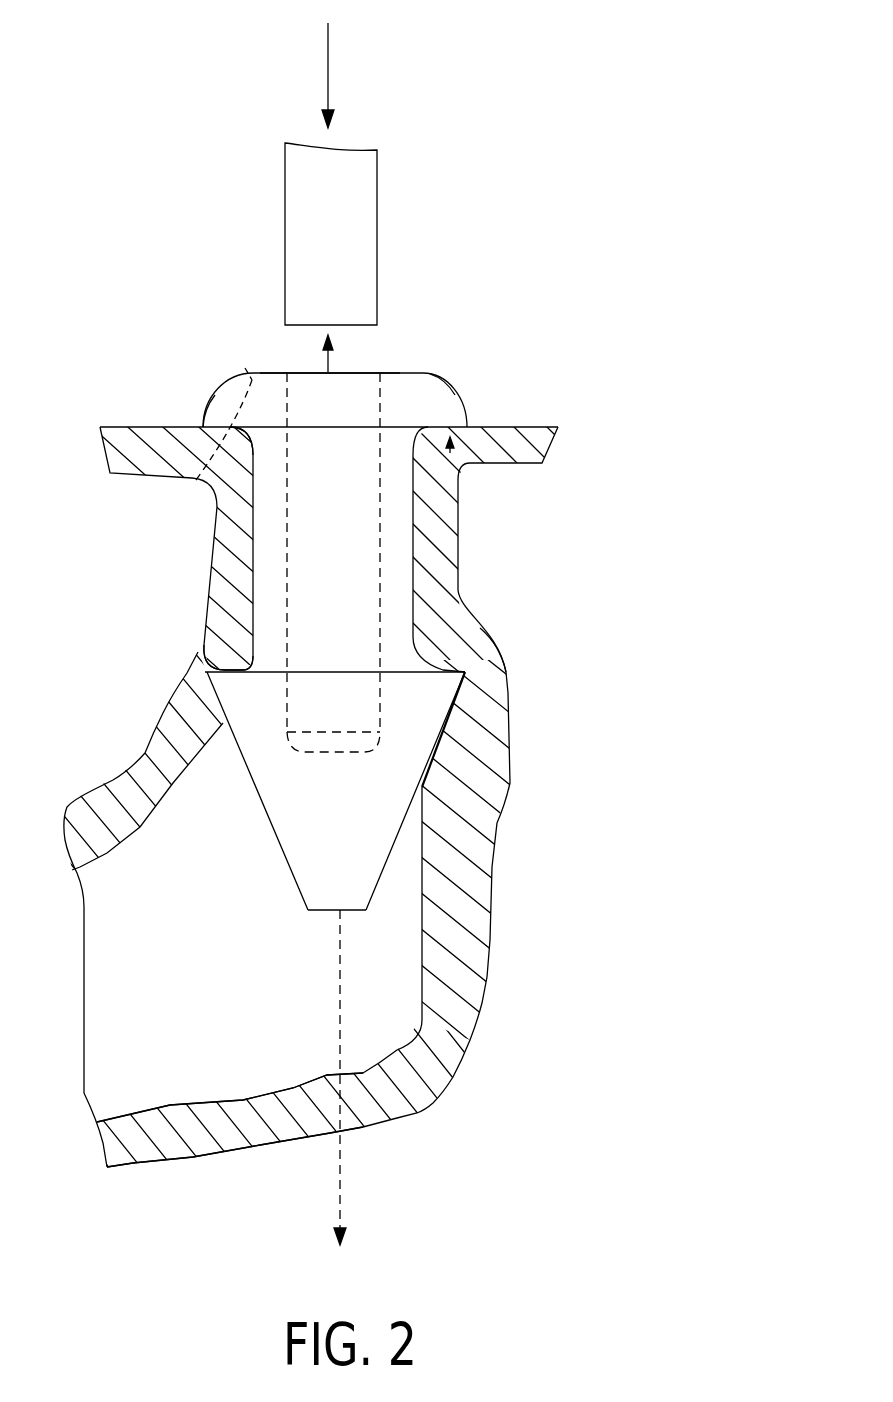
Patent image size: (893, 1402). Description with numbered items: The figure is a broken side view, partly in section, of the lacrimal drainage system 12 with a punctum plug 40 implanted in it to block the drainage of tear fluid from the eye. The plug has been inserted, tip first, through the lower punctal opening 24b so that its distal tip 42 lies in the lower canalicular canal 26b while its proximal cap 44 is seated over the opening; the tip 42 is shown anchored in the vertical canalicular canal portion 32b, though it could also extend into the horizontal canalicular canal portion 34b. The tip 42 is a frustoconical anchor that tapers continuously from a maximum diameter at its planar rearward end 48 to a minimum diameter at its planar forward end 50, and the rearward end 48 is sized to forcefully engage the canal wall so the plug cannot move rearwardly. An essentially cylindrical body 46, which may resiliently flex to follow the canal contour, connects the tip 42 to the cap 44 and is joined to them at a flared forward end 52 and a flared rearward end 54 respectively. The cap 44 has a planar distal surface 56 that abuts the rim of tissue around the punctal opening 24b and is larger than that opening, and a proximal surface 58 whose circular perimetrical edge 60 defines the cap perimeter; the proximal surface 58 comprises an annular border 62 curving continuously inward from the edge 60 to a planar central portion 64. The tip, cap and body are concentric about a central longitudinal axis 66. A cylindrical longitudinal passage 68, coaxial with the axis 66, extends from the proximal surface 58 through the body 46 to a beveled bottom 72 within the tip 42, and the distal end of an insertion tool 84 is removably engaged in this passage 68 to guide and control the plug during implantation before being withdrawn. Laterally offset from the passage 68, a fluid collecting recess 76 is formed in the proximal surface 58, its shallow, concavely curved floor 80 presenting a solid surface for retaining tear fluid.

The lacrimal drainage system 12 is at (314, 935).
The lower punctal opening 24b is at (428, 425).
The lower canalicular canal 26b is at (84, 775).
The vertical canalicular canal portion 32b is at (495, 643).
The horizontal canalicular canal portion 34b is at (128, 1170).
The punctum plug 40 is at (330, 477).
The distal tip 42 is at (373, 833).
The proximal cap 44 is at (197, 387).
The body 46 is at (428, 557).
The rearward end 48 is at (472, 638).
The forward end 50 is at (309, 912).
The flared forward end 52 is at (220, 657).
The flared rearward end 54 is at (248, 428).
The distal surface 56 is at (468, 463).
The proximal surface 58 is at (408, 360).
The perimetrical edge 60 is at (202, 424).
The annular border 62 is at (445, 379).
The central portion 64 is at (290, 372).
The central longitudinal axis 66 is at (342, 1193).
The longitudinal passage 68 is at (288, 575).
The beveled bottom 72 is at (352, 755).
The fluid collecting recess 76 is at (243, 362).
The floor 80 is at (196, 480).
The insertion tool 84 is at (377, 180).